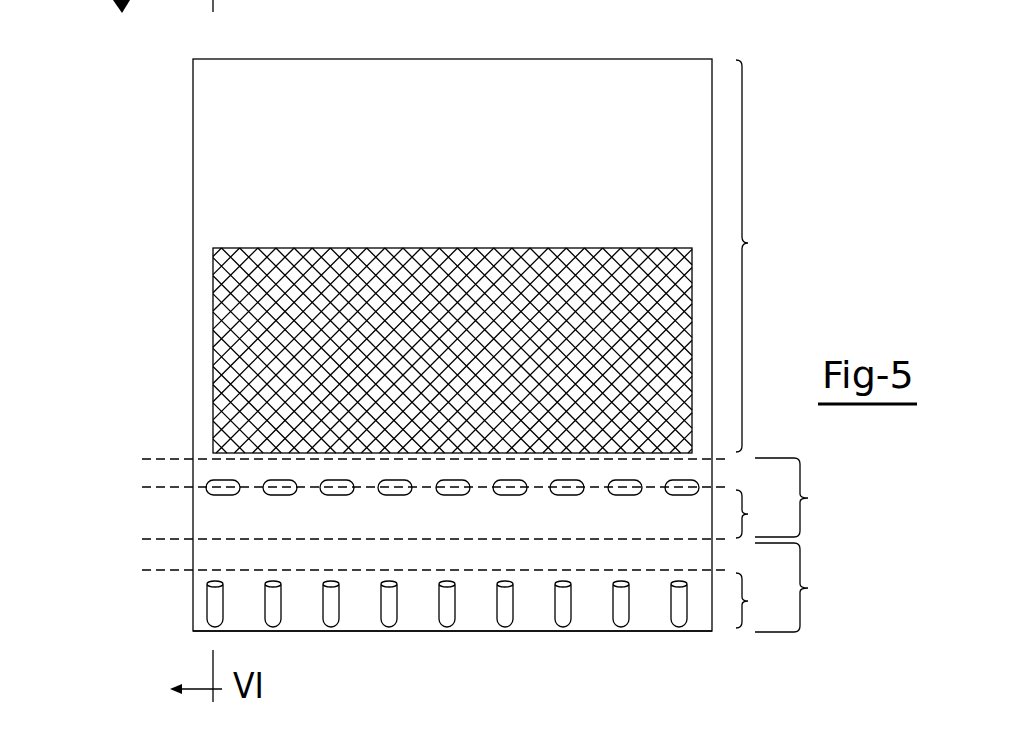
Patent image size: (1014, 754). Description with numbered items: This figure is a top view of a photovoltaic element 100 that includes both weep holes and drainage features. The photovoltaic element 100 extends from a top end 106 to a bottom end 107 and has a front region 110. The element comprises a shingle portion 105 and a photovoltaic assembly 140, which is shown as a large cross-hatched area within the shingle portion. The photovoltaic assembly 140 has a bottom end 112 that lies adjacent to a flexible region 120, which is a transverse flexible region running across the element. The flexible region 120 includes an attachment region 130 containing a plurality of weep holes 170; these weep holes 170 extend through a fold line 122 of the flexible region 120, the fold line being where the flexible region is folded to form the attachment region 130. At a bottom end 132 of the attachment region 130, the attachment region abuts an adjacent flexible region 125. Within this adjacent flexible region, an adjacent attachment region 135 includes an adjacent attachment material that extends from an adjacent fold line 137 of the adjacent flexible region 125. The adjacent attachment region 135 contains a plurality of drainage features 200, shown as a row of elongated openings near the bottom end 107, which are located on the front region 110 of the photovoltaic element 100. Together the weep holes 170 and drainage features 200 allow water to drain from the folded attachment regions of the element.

The photovoltaic element 100 is at (766, 753).
The shingle portion 105 is at (458, 162).
The top end 106 is at (436, 58).
The bottom end 107 is at (550, 632).
The front region 110 is at (763, 256).
The bottom end of photovoltaic assembly 112 is at (416, 458).
The flexible region 120 is at (800, 497).
The fold line 122 is at (416, 487).
The adjacent flexible region 125 is at (800, 587).
The attachment region 130 is at (762, 514).
The bottom end of attachment region 132 is at (416, 538).
The adjacent attachment region 135 is at (762, 600).
The adjacent fold line 137 is at (416, 568).
The photovoltaic assembly 140 is at (463, 352).
The weep holes 170 is at (277, 470).
The drainage features 200 is at (378, 645).